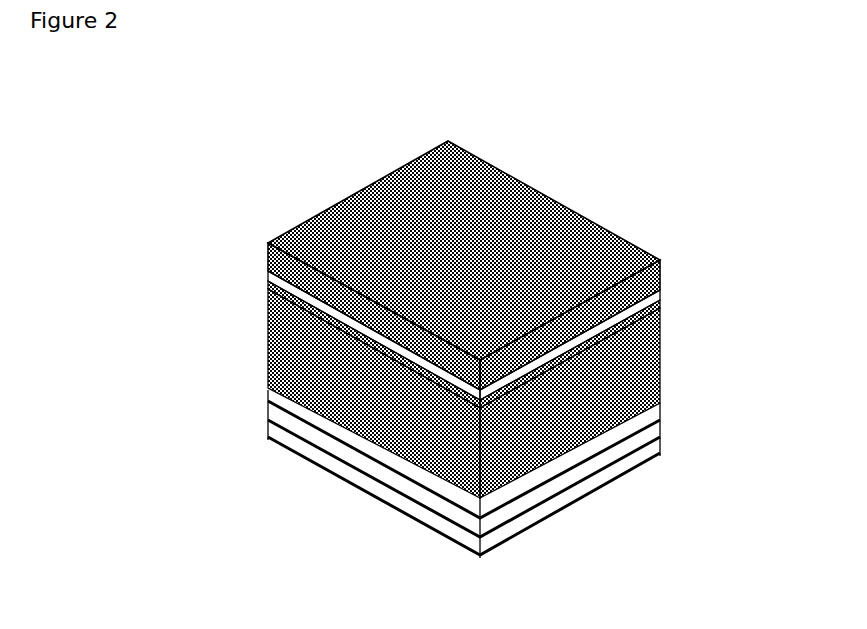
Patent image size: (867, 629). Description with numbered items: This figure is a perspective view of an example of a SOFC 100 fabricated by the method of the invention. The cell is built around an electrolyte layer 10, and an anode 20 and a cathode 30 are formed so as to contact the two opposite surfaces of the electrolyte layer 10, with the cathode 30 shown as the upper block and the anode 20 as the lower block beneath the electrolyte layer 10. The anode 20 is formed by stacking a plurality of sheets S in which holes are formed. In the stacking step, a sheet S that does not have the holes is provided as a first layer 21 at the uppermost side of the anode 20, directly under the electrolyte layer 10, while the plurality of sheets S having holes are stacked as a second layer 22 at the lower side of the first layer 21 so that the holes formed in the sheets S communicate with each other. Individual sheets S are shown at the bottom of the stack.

The SOFC 100 is at (347, 126).
The cathode 30 is at (662, 261).
The electrolyte layer 10 is at (664, 290).
The anode 20 is at (192, 279).
The first layer 21 is at (266, 283).
The second layer 22 is at (270, 287).
The sheet S is at (550, 506).